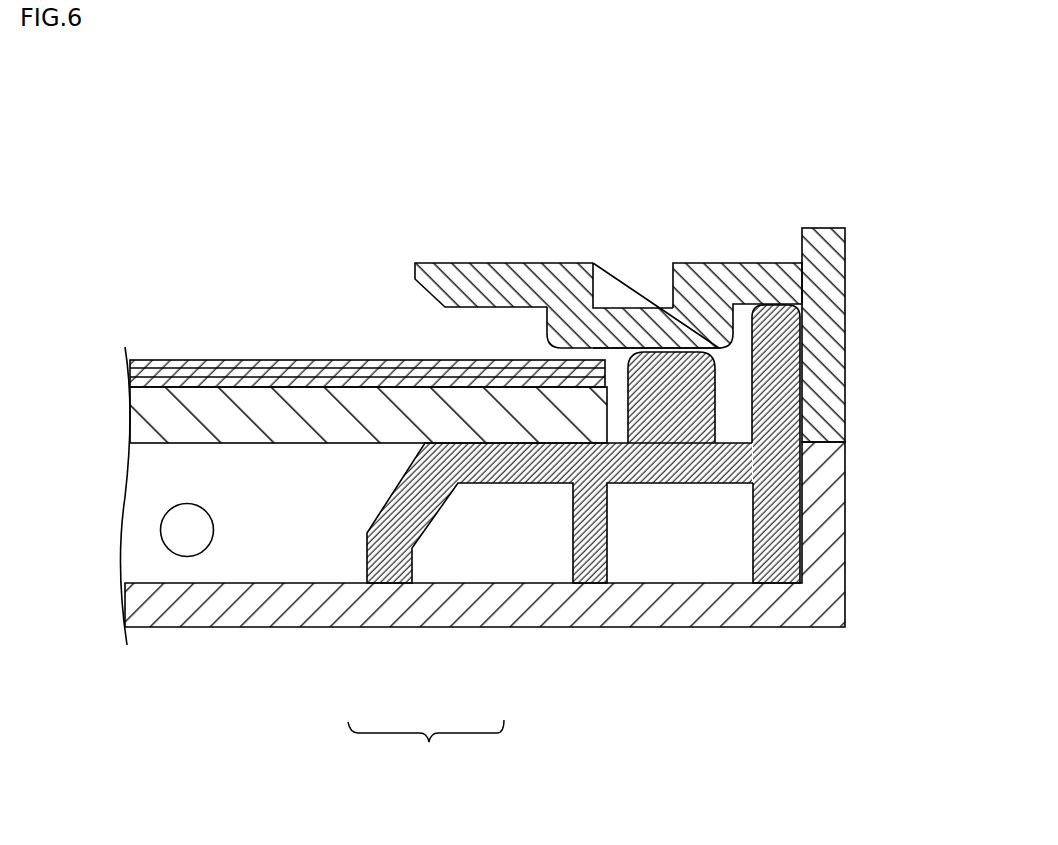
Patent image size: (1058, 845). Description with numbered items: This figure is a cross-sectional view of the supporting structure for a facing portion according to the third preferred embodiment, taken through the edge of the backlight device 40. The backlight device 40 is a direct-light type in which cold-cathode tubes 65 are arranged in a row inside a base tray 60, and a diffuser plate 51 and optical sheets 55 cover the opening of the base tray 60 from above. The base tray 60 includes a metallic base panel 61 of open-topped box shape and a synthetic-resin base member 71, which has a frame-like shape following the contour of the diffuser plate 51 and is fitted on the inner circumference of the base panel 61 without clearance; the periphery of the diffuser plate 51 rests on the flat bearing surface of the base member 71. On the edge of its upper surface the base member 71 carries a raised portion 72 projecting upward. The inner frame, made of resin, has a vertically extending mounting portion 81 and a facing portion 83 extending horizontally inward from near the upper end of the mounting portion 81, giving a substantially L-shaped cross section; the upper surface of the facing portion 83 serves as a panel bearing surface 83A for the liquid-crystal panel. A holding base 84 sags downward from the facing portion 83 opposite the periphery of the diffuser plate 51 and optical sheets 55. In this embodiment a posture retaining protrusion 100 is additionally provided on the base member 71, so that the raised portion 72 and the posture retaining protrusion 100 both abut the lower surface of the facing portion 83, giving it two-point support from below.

The backlight device 40 is at (368, 269).
The diffuser plate 51 is at (293, 416).
The optical sheets 55 is at (162, 352).
The base tray 60 is at (426, 747).
The base panel 61 is at (318, 612).
The cold-cathode tubes 65 is at (181, 523).
The base member 71 is at (517, 463).
The raised portion 72 is at (765, 381).
The mounting portion 81 is at (827, 348).
The facing portion 83 is at (608, 220).
The panel bearing surface 83A is at (455, 263).
The holding base 84 is at (628, 315).
The posture retaining protrusion 100 is at (665, 420).